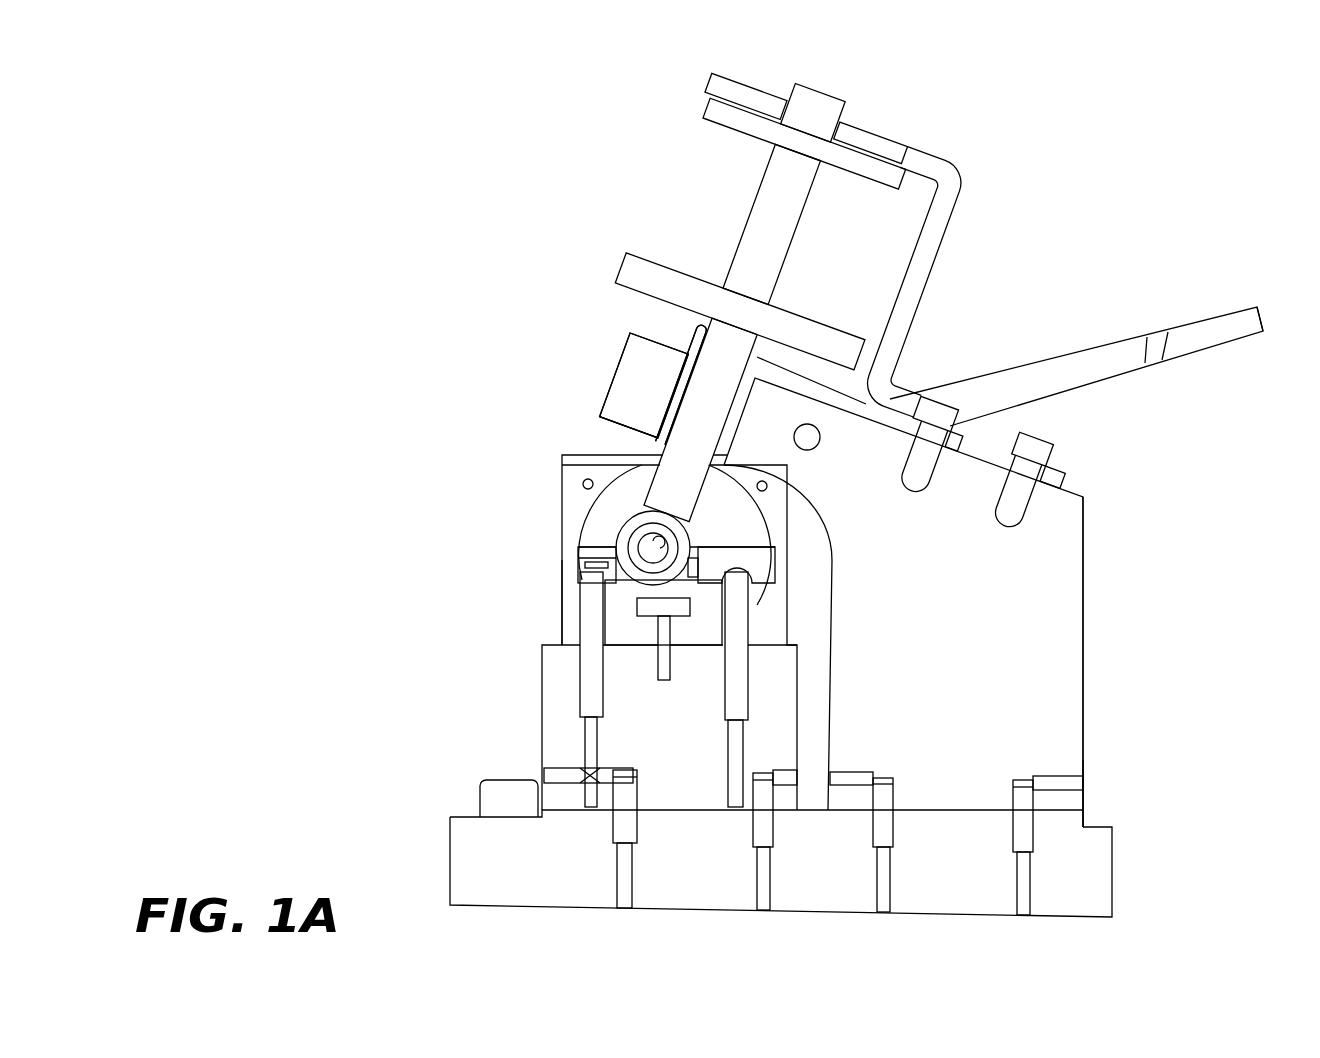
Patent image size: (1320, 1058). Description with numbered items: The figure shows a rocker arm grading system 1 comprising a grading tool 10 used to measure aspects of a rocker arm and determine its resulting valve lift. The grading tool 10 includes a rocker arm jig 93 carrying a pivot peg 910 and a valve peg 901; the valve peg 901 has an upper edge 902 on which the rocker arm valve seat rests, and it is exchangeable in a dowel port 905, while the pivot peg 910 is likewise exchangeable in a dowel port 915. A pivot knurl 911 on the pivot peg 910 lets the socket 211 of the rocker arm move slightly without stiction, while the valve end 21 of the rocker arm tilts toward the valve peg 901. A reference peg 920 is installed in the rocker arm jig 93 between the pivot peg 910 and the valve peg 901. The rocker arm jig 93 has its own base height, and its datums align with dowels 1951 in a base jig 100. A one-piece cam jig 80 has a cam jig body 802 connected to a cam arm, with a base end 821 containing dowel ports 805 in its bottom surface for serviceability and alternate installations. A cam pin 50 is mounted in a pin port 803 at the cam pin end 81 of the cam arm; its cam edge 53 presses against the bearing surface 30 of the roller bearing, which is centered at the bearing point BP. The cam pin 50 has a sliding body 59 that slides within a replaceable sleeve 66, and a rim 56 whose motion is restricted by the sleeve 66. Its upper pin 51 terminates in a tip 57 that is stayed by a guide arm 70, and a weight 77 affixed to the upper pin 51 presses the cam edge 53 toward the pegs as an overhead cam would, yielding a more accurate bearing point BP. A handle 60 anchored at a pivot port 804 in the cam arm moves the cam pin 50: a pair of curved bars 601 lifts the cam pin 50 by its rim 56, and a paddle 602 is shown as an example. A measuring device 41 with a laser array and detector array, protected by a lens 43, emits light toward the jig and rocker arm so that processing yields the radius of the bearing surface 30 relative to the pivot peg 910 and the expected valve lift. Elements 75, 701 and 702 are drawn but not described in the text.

The rocker arm grading system 1 is at (540, 145).
The grading tool 10 is at (1112, 158).
The valve end 21 is at (577, 549).
The bearing surface 30 is at (647, 515).
The measuring device 41 is at (562, 462).
The lens 43 is at (613, 502).
The cam pin 50 is at (803, 252).
The upper pin 51 is at (742, 266).
The cam edge 53 is at (672, 512).
The rim 56 is at (628, 262).
The tip 57 is at (805, 87).
The sliding body 59 is at (662, 405).
The handle 60 is at (1077, 346).
The sleeve 66 is at (688, 338).
The guide arm 70 is at (960, 178).
The right top plate 75 is at (843, 121).
The weight 77 is at (706, 106).
The cam jig 80 is at (1075, 522).
The cam pin end 81 is at (604, 376).
The rocker arm jig 93 is at (542, 727).
The base jig 100 is at (452, 862).
The socket 211 is at (775, 548).
The curved bars 601 is at (686, 352).
The paddle 602 is at (1250, 310).
The left top plate 701 is at (712, 74).
The locking pin 702 is at (1052, 460).
The cam jig body 802 is at (1085, 652).
The pin port 803 is at (628, 362).
The pivot port 804 is at (824, 440).
The dowel ports 805 is at (1010, 797).
The base end 821 is at (1085, 745).
The valve peg 901 is at (562, 604).
The upper edge 902 is at (583, 578).
The dowel port 905 is at (580, 690).
The pivot peg 910 is at (787, 636).
The pivot knurl 911 is at (760, 580).
The dowel port 915 is at (726, 690).
The reference peg 920 is at (692, 634).
The dowels 1951 is at (637, 818).
The bearing point BP is at (660, 548).